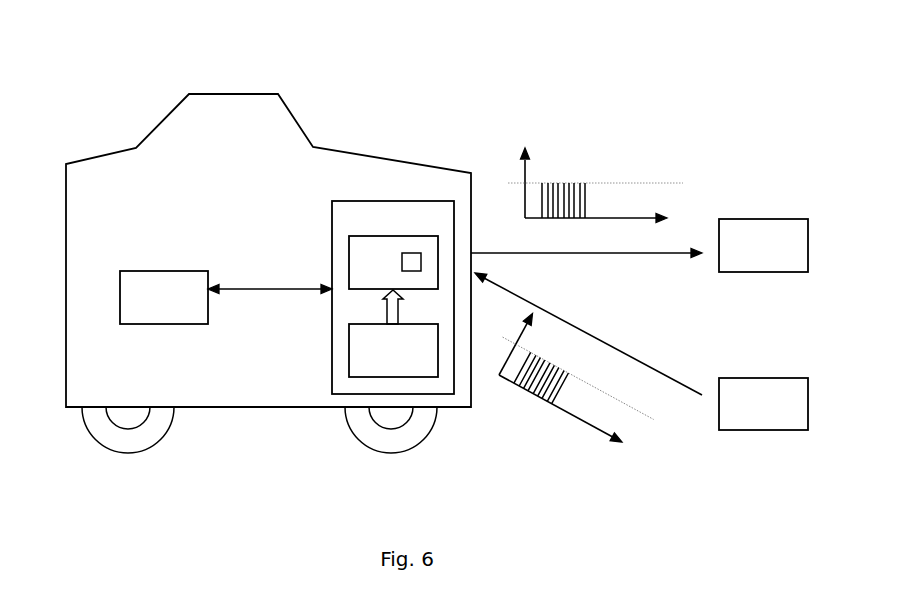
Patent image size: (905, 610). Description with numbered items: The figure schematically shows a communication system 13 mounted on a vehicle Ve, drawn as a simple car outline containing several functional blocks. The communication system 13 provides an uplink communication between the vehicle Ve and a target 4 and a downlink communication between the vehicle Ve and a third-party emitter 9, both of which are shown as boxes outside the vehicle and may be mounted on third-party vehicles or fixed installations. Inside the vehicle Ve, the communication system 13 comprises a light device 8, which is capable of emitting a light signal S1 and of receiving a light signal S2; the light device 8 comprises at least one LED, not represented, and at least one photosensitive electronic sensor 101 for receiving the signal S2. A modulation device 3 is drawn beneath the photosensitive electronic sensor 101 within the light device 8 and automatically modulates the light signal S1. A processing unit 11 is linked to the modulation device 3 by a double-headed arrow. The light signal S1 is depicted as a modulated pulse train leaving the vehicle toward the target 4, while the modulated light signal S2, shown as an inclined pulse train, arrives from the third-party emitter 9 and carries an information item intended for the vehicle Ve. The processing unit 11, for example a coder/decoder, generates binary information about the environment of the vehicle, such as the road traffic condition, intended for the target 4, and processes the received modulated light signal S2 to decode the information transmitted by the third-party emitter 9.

The communication system 13 is at (318, 67).
The vehicle Ve is at (231, 415).
The light device 8 is at (385, 192).
The photosensitive electronic sensor 101 is at (422, 226).
The modulation device 3 is at (358, 358).
The processing unit 11 is at (156, 281).
The target 4 is at (756, 228).
The third-party emitter 9 is at (756, 385).
The light signal S1 is at (569, 172).
The modulated light signal S2 is at (548, 422).